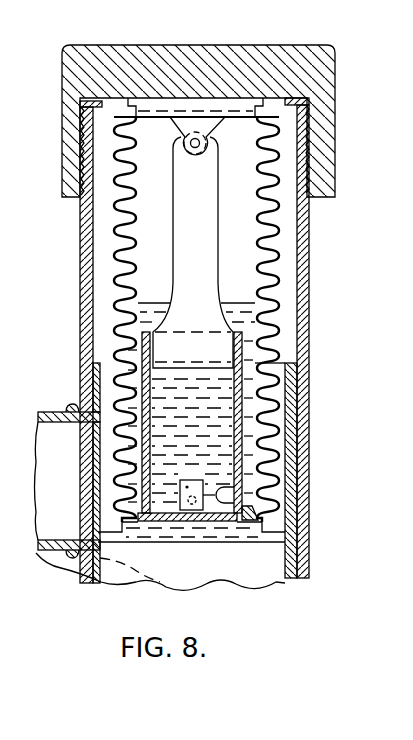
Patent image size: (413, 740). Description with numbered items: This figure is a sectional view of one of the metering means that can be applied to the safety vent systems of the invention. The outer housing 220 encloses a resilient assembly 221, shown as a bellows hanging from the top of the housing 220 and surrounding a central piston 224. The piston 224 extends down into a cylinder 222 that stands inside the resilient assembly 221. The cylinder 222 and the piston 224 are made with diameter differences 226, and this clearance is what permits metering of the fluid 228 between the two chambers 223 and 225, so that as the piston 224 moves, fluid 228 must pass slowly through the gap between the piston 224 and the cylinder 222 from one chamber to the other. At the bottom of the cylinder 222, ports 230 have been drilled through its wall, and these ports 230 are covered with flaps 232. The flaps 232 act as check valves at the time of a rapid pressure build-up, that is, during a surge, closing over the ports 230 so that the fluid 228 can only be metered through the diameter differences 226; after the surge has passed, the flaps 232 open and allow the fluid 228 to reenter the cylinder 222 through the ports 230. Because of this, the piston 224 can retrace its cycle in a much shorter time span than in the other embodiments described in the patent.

The housing 220 is at (327, 229).
The resilient assembly 221 is at (285, 283).
The cylinder 222 is at (265, 413).
The chamber 223 is at (272, 387).
The piston 224 is at (218, 250).
The chamber 225 is at (240, 173).
The diameter differences 226 is at (270, 347).
The fluid 228 is at (147, 302).
The ports 230 is at (246, 506).
The flaps 232 is at (187, 479).